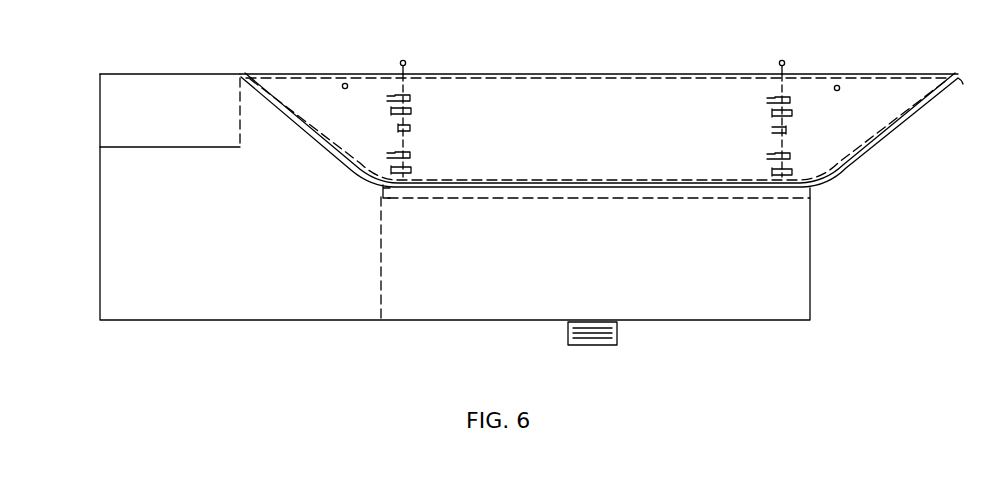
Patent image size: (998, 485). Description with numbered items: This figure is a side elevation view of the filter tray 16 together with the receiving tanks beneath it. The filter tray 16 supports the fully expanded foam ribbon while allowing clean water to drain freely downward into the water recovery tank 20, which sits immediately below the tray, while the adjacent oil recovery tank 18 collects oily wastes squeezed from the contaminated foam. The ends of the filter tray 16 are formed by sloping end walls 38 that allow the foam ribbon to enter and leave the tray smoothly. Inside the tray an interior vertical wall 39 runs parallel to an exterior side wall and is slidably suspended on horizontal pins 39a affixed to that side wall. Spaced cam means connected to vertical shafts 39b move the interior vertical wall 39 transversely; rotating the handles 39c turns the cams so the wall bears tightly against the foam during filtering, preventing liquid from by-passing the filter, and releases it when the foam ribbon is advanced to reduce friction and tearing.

The filter tray 16 is at (552, 54).
The oil recovery tank 18 is at (192, 310).
The water recovery tank 20 is at (455, 312).
The sloping end walls 38 is at (300, 141).
The interior vertical wall 39 is at (278, 86).
The horizontal pins 39a is at (346, 83).
The vertical shafts 39b is at (406, 128).
The handles 39c is at (406, 62).